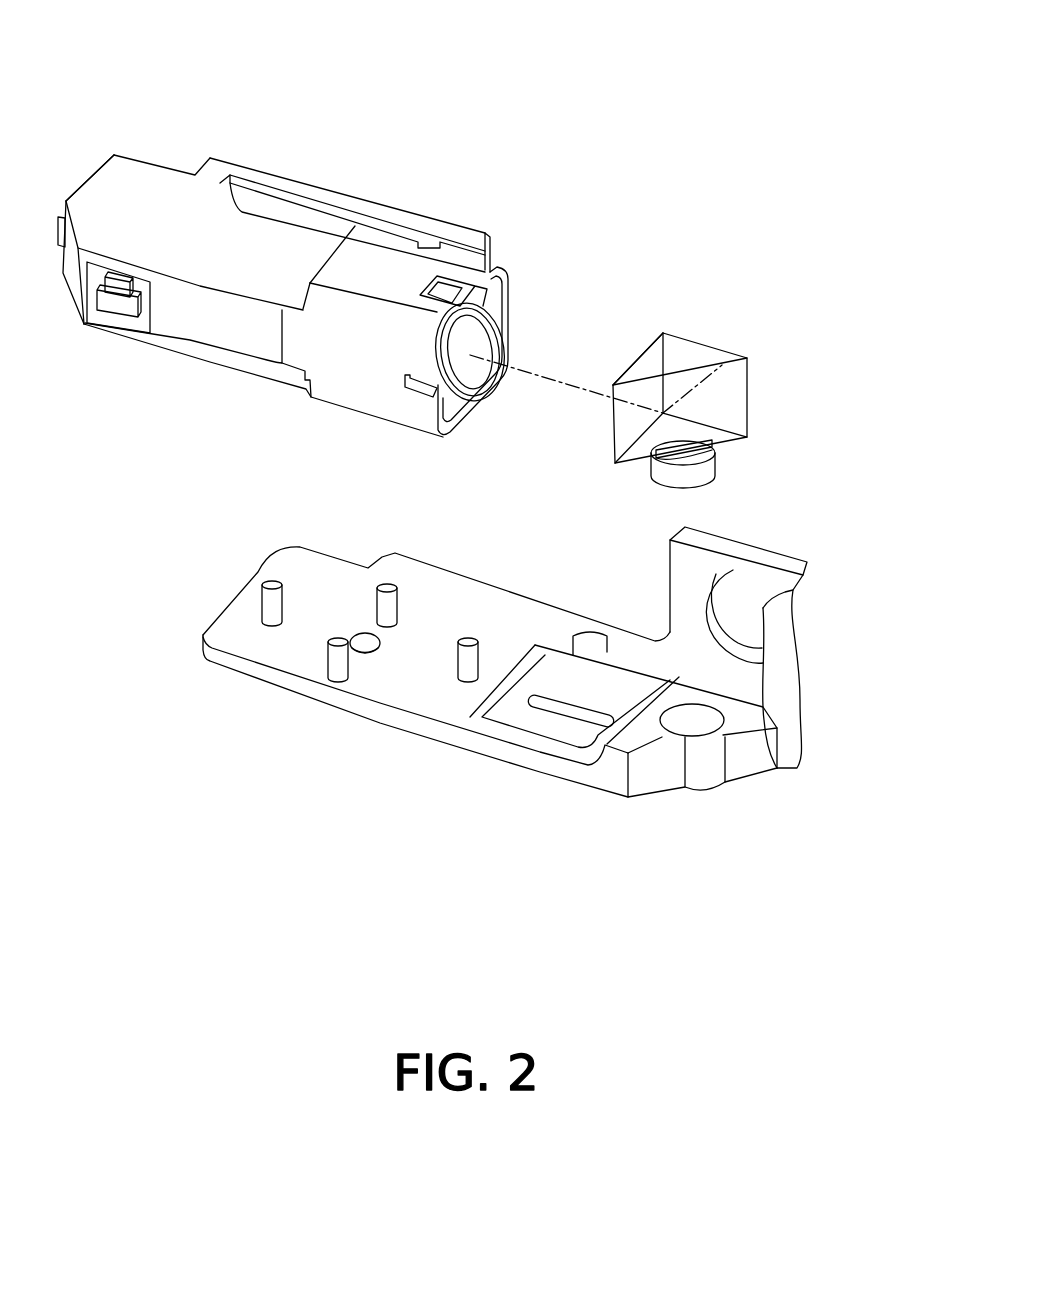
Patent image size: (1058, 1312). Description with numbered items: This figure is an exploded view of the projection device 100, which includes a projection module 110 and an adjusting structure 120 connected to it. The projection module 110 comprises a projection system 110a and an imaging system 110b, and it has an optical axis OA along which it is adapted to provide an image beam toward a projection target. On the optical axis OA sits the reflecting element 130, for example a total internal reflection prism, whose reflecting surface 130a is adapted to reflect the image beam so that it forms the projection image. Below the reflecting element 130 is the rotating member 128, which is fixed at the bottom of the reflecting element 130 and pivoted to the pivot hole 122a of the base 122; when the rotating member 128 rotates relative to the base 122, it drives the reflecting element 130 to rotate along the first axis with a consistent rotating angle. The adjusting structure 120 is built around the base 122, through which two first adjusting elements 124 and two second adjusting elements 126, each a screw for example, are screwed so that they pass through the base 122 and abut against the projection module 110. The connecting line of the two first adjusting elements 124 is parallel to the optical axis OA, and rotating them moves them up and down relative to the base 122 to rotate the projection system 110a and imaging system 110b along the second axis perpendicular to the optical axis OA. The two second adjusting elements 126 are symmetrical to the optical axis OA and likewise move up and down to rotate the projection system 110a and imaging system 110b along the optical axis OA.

The projection device 100 is at (499, 488).
The projection module 110 is at (284, 223).
The projection system 110a is at (266, 160).
The imaging system 110b is at (435, 215).
The optical axis OA is at (548, 376).
The reflecting element 130 is at (745, 394).
The reflecting surface 130a is at (731, 408).
The rotating member 128 is at (708, 471).
The adjusting structure 120 is at (571, 714).
The base 122 is at (680, 779).
The pivot hole 122a is at (688, 717).
The first adjusting elements 124 is at (458, 661).
The second adjusting elements 126 is at (392, 608).